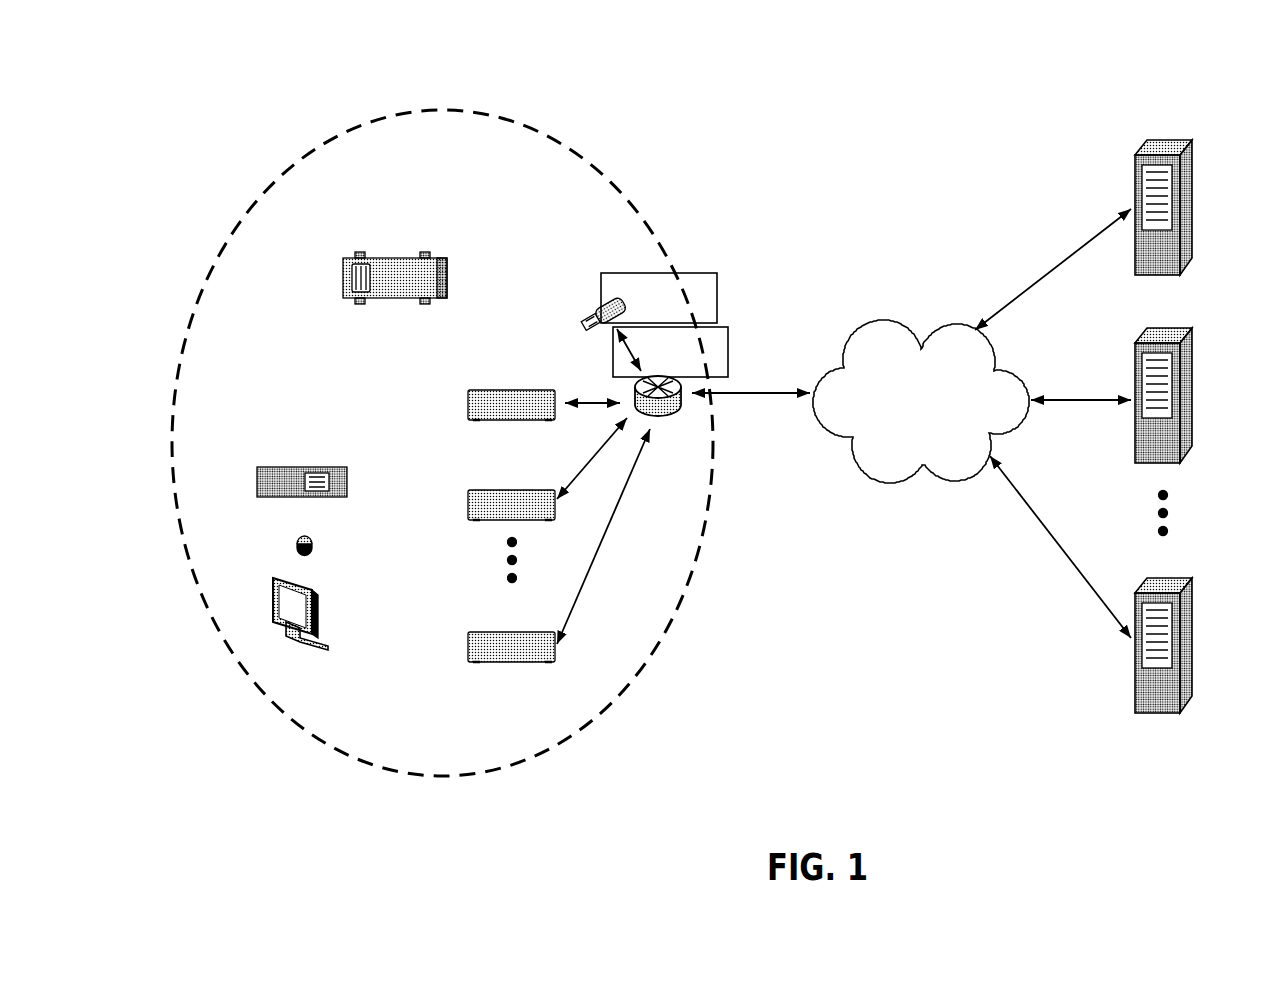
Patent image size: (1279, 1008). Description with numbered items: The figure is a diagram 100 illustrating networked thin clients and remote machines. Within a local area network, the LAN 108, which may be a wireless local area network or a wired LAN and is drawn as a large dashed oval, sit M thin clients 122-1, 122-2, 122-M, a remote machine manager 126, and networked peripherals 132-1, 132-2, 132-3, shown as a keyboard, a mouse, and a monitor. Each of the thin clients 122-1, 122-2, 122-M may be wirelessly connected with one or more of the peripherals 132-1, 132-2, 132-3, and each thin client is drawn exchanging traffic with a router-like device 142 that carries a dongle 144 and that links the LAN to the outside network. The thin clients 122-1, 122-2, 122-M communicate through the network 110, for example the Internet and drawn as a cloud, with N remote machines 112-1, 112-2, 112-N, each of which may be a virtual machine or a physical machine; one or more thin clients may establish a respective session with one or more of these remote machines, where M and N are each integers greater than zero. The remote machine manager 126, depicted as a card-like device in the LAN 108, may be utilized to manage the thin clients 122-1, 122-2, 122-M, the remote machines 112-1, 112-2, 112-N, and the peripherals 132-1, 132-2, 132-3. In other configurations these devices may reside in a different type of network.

The diagram 100 is at (132, 99).
The LAN 108 is at (604, 170).
The network 110 is at (903, 326).
The remote machine 112-1 is at (1193, 180).
The remote machine 112-2 is at (1193, 383).
The remote machine 112-N is at (1193, 645).
The thin client 122-1 is at (488, 390).
The thin client 122-2 is at (488, 490).
The thin client 122-M is at (501, 620).
The remote machine manager 126 is at (448, 280).
The peripheral 132-1 is at (348, 482).
The peripheral 132-2 is at (313, 545).
The peripheral 132-3 is at (322, 614).
The router / gateway 142 is at (655, 373).
The USB dongle 144 is at (620, 306).